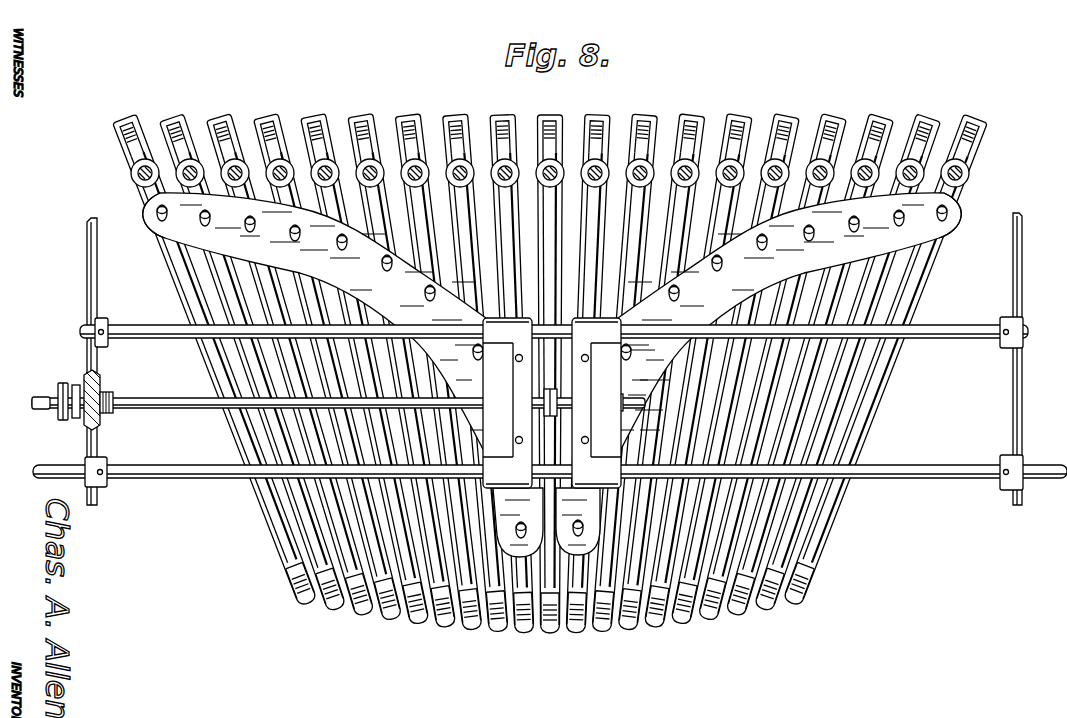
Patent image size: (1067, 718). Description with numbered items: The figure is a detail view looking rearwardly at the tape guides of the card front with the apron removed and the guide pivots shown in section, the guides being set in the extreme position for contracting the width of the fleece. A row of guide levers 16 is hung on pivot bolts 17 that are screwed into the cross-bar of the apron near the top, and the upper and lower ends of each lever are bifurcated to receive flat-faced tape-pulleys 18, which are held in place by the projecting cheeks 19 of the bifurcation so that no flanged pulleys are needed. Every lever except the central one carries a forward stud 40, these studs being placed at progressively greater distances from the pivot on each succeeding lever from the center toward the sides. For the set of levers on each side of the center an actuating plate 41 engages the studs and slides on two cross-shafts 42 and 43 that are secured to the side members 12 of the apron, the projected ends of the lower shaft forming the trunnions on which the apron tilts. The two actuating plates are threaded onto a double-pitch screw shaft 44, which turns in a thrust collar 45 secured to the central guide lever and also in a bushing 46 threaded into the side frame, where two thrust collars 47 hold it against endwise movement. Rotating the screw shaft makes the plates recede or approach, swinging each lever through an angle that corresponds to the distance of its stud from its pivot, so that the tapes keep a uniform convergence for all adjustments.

The side members 12 is at (86, 287).
The guide levers 16 is at (862, 412).
The pivot bolt 17 is at (135, 172).
The tape-pulleys 18 is at (124, 118).
The projecting cheeks 19 is at (547, 635).
The forward stud 40 is at (157, 212).
The actuating plate 41 is at (166, 236).
The cross-shaft 42 is at (972, 325).
The cross-shaft 43 is at (1033, 463).
The double-pitch screw shaft 44 is at (33, 406).
The thrust collar 45 is at (545, 398).
The bushing 46 is at (74, 385).
The thrust collars 47 is at (56, 395).